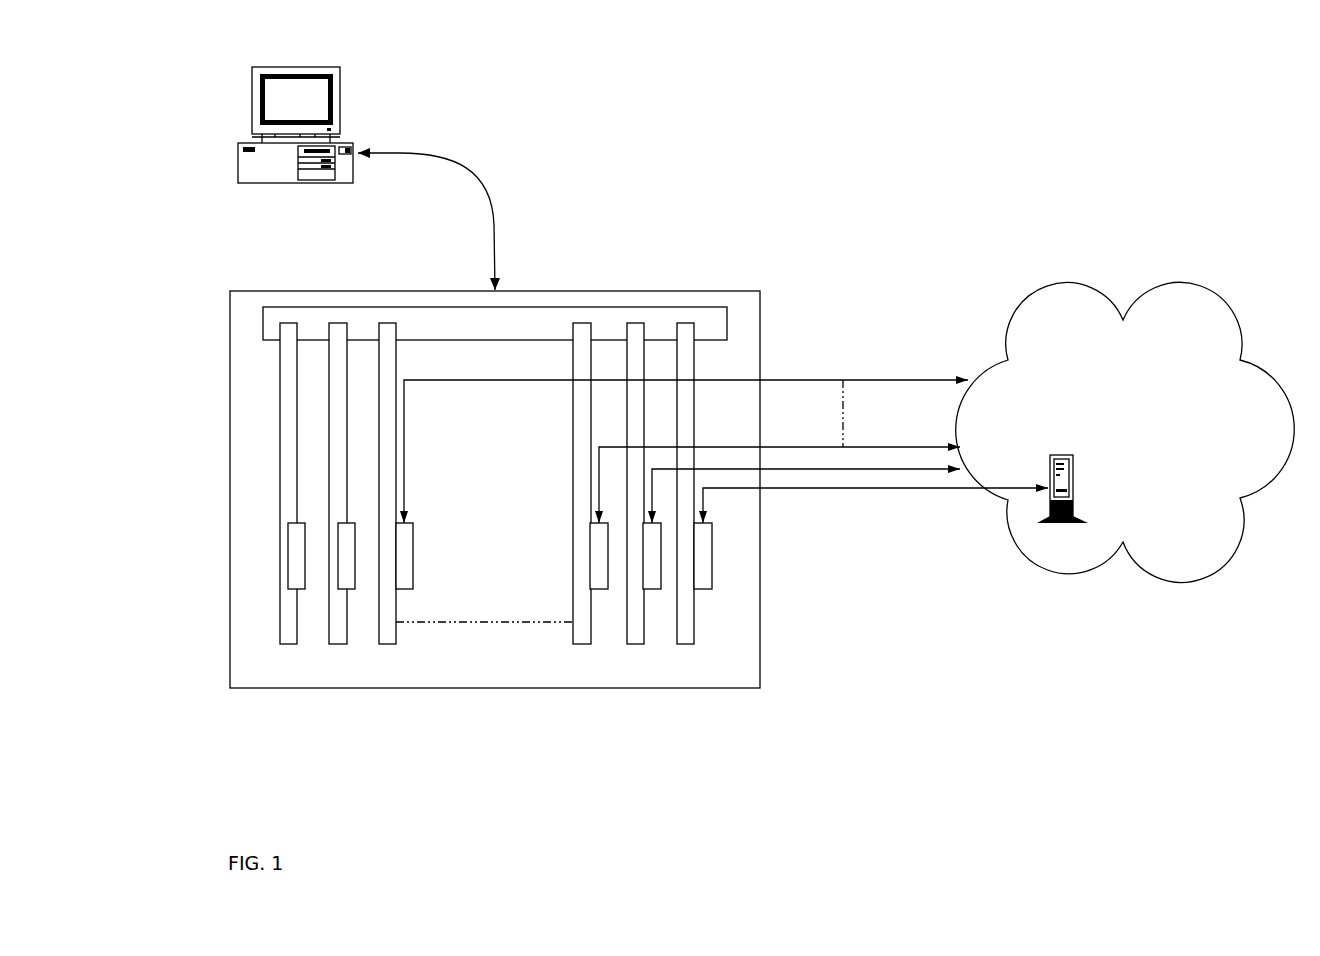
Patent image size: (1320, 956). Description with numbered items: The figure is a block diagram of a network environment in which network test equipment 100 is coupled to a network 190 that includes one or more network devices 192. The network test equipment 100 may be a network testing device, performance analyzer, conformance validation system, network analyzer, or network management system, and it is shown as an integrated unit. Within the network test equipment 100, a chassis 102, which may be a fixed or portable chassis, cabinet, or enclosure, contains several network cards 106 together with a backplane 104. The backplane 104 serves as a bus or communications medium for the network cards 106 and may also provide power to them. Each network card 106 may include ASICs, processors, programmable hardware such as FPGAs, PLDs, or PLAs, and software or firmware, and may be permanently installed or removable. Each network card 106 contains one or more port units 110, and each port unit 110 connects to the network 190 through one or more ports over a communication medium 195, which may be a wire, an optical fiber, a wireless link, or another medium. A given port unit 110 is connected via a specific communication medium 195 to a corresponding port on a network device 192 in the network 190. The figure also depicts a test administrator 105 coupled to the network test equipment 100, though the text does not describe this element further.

The network test equipment 100 is at (695, 90).
The chassis 102 is at (612, 291).
The backplane 104 is at (677, 307).
The test administrator 105 is at (356, 178).
The network card 106 is at (263, 645).
The port unit 110 is at (703, 588).
The network 190 is at (1125, 454).
The network device 192 is at (1073, 490).
The communication medium 195 is at (825, 488).